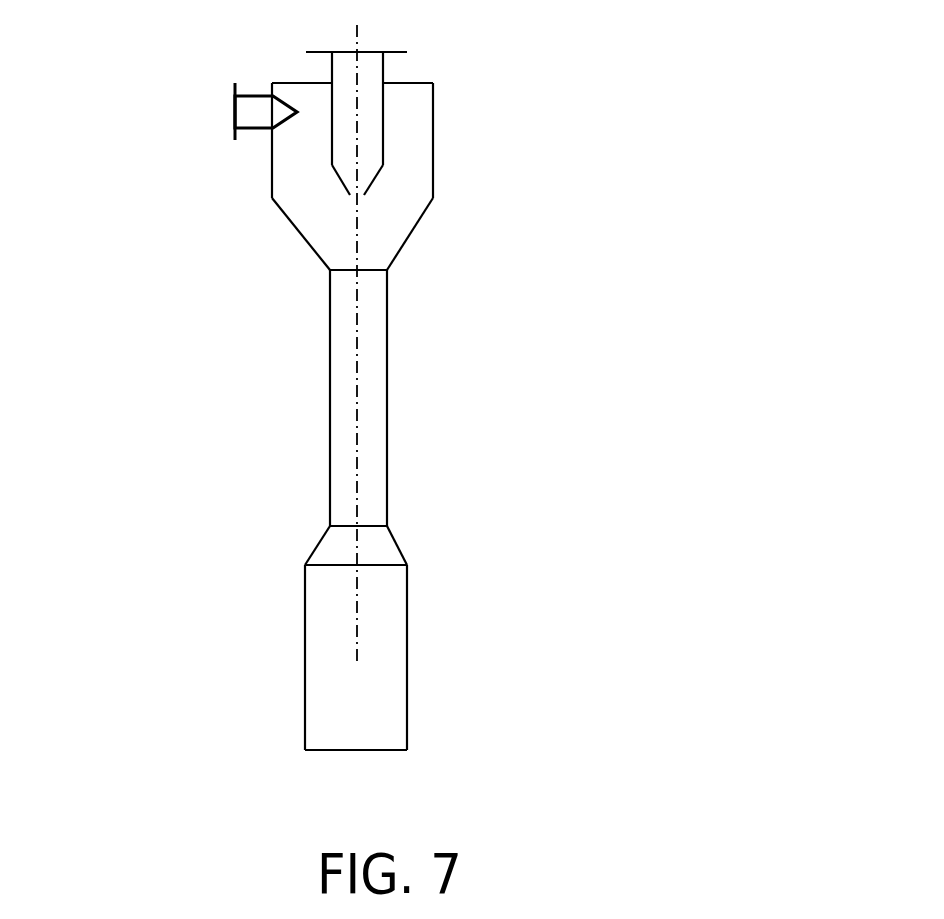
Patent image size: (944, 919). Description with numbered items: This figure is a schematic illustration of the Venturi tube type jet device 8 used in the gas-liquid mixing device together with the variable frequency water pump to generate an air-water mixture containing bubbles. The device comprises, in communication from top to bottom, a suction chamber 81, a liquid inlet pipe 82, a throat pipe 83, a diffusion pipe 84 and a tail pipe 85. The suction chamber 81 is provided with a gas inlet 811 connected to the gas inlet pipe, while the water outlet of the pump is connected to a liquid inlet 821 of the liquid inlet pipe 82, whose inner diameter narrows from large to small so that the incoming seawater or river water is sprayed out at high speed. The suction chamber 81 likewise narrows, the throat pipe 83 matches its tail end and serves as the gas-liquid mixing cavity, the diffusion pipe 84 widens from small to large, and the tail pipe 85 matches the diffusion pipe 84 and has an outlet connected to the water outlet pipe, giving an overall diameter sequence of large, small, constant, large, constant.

The Venturi tube type jet device 8 is at (242, 354).
The suction chamber 81 is at (462, 140).
The gas inlet 811 is at (179, 92).
The liquid inlet pipe 82 is at (282, 213).
The liquid inlet 821 is at (380, 52).
The throat pipe 83 is at (470, 398).
The diffusion pipe 84 is at (457, 525).
The tail pipe 85 is at (457, 657).